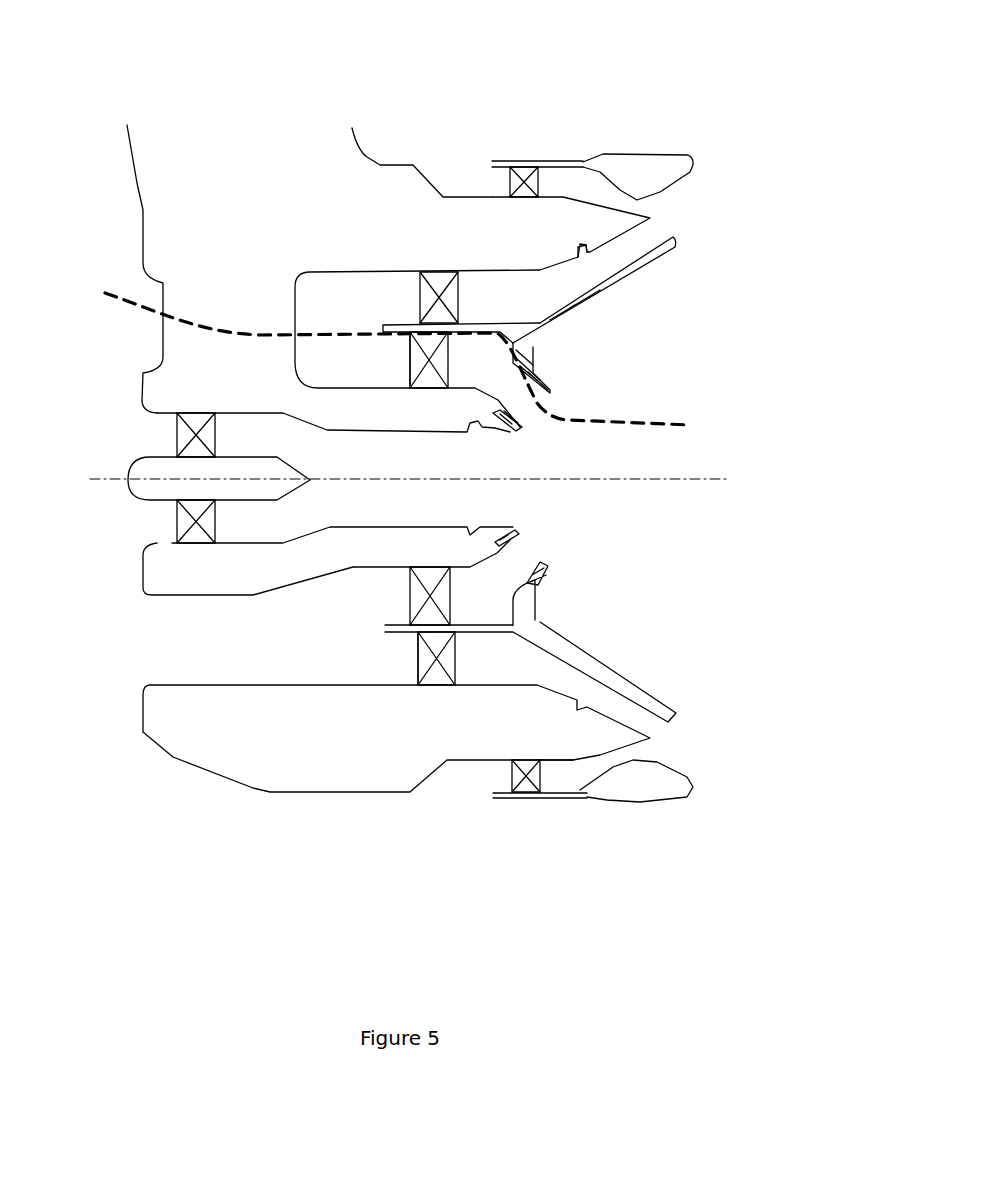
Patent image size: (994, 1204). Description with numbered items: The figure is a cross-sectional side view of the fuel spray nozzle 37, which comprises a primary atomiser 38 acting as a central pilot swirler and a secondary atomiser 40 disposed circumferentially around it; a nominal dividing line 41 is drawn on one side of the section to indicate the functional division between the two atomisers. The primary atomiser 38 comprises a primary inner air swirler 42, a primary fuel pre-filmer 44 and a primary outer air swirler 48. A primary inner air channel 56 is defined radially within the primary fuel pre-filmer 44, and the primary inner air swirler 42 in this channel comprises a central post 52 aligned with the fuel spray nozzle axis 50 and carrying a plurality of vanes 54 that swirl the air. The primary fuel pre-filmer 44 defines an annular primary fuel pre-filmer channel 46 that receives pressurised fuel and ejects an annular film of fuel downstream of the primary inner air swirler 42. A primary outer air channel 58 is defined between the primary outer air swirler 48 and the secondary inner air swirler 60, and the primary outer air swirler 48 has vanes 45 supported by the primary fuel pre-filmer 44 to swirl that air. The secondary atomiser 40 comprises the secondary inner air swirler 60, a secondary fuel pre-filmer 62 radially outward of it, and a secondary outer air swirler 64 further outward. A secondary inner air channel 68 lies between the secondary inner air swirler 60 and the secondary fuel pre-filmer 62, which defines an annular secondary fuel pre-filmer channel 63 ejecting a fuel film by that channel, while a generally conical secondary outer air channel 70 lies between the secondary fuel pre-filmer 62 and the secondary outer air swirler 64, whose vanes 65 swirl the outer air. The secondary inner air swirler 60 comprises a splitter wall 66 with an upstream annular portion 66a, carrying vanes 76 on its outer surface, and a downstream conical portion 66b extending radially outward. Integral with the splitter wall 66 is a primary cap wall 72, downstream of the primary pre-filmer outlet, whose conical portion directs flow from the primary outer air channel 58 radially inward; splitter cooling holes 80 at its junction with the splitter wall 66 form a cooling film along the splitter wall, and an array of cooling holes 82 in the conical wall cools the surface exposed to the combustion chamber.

The fuel spray nozzle 37 is at (45, 42).
The primary atomiser 38 is at (160, 395).
The secondary atomiser 40 is at (492, 195).
The nominal dividing line 41 is at (690, 425).
The primary inner air swirler 42 is at (143, 448).
The primary fuel pre-filmer 44 is at (423, 418).
The vanes 45 is at (413, 352).
The primary fuel pre-filmer channel 46 is at (525, 528).
The primary outer air swirler 48 is at (405, 572).
The fuel spray nozzle axis 50 is at (727, 480).
The central post 52 is at (150, 465).
The vanes 54 is at (196, 512).
The primary inner air channel 56 is at (335, 473).
The primary outer air channel 58 is at (454, 368).
The secondary inner air swirler 60 is at (557, 337).
The secondary fuel pre-filmer 62 is at (567, 733).
The secondary fuel pre-filmer channel 63 is at (590, 252).
The secondary outer air swirler 64 is at (563, 795).
The vanes 65 is at (520, 780).
The splitter wall 66 is at (650, 269).
The upstream annular portion 66a is at (395, 330).
The downstream conical portion 66b is at (585, 300).
The secondary inner air channel 68 is at (491, 308).
The secondary outer air channel 70 is at (541, 191).
The primary cap wall 72 is at (545, 408).
The vanes 76 is at (418, 673).
The splitter cooling holes 80 is at (535, 615).
The cooling holes 82 is at (538, 580).